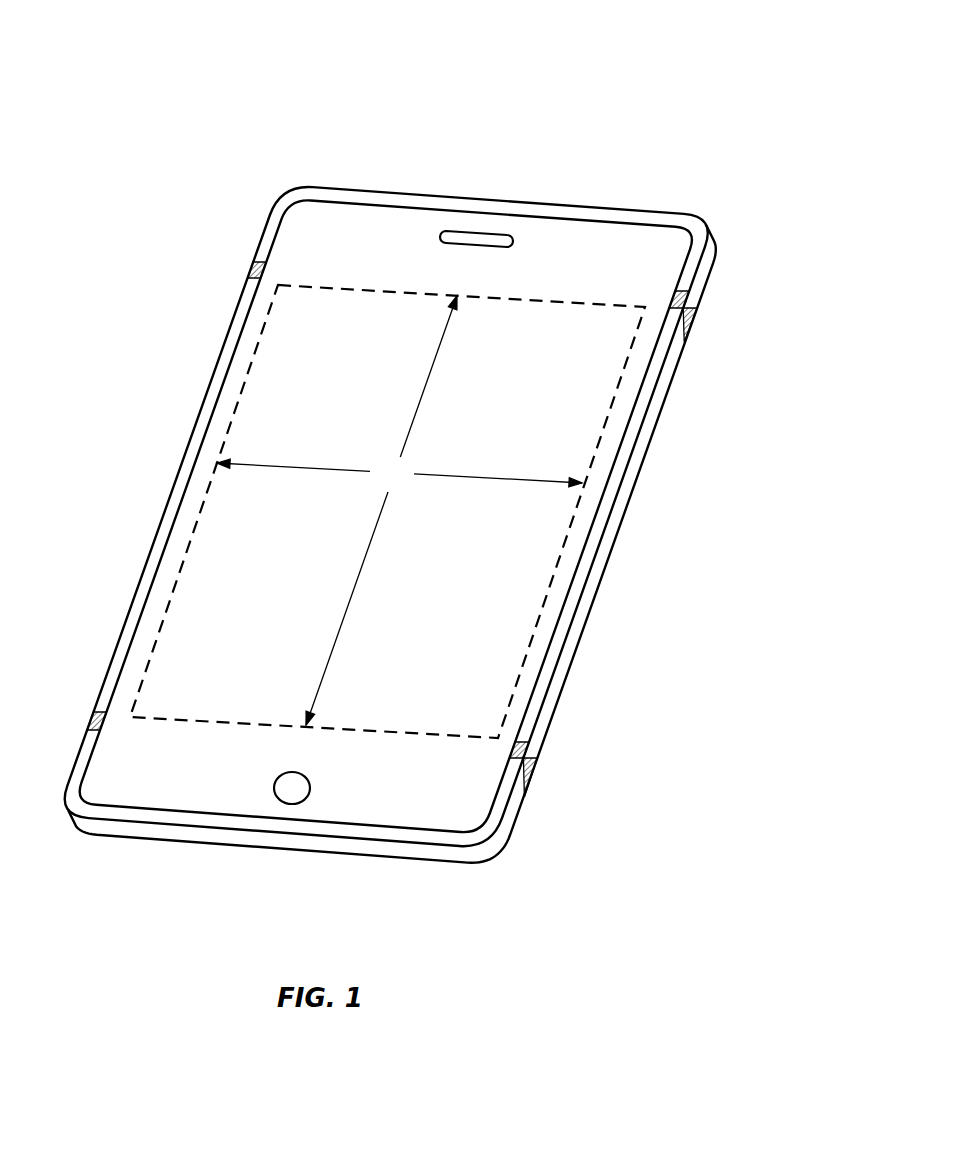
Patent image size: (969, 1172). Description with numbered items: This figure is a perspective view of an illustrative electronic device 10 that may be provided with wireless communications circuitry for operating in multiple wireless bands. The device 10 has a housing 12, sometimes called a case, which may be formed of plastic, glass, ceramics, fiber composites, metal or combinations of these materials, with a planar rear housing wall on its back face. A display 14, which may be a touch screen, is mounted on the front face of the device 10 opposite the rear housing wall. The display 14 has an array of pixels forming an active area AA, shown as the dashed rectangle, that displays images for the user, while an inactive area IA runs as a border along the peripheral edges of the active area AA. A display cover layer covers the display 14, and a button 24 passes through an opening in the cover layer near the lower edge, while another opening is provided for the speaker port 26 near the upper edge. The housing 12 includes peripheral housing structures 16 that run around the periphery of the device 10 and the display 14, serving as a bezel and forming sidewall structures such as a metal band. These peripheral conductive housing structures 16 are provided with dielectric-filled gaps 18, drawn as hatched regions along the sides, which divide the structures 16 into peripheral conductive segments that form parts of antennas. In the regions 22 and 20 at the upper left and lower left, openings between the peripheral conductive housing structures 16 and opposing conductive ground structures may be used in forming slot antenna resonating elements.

The electronic device 10 is at (410, 471).
The housing 12 is at (722, 250).
The display 14 is at (343, 263).
The peripheral housing structures 16 is at (444, 853).
The gaps 18 is at (250, 268).
The region 20 is at (82, 734).
The region 22 is at (267, 185).
The button 24 is at (289, 805).
The speaker port 26 is at (479, 231).
The inactive area IA is at (603, 240).
The active area AA is at (387, 511).